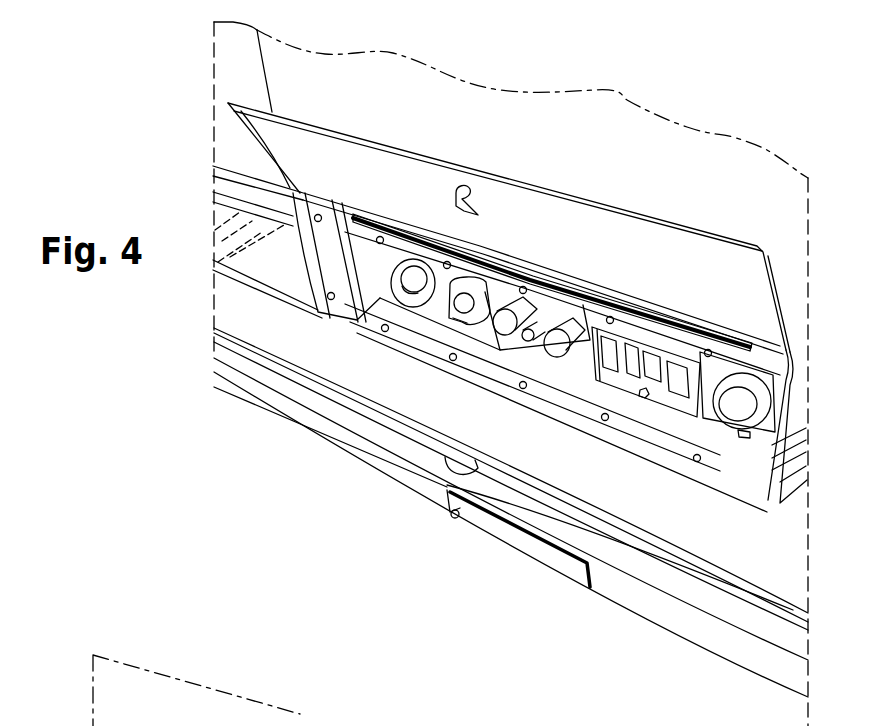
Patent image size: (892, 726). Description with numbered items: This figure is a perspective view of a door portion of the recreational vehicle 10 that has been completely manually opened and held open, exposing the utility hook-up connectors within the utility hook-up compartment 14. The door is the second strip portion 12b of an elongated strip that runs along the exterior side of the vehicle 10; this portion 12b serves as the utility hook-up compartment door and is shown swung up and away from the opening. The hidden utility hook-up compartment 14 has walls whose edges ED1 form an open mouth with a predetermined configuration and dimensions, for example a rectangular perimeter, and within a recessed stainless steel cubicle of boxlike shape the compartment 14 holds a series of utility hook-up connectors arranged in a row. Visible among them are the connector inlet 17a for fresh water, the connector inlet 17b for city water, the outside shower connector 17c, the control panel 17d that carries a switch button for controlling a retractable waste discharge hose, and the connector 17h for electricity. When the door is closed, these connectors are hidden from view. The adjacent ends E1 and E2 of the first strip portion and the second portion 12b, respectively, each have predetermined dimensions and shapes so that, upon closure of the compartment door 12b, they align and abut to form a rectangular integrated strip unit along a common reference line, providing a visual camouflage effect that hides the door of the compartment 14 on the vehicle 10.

The recreational vehicle 10 is at (686, 78).
The second strip portion 12b is at (596, 228).
The utility hook-up compartment 14 is at (336, 307).
The connector inlet for fresh water 17a is at (410, 281).
The connector inlet for city water 17b is at (457, 300).
The outside shower connector 17c is at (533, 307).
The control panel 17d is at (625, 416).
The connector for electricity 17h is at (710, 418).
The adjacent end of first portion E1 is at (238, 360).
The adjacent end of second portion E2 is at (267, 160).
The edges of compartment walls ED1 is at (555, 395).